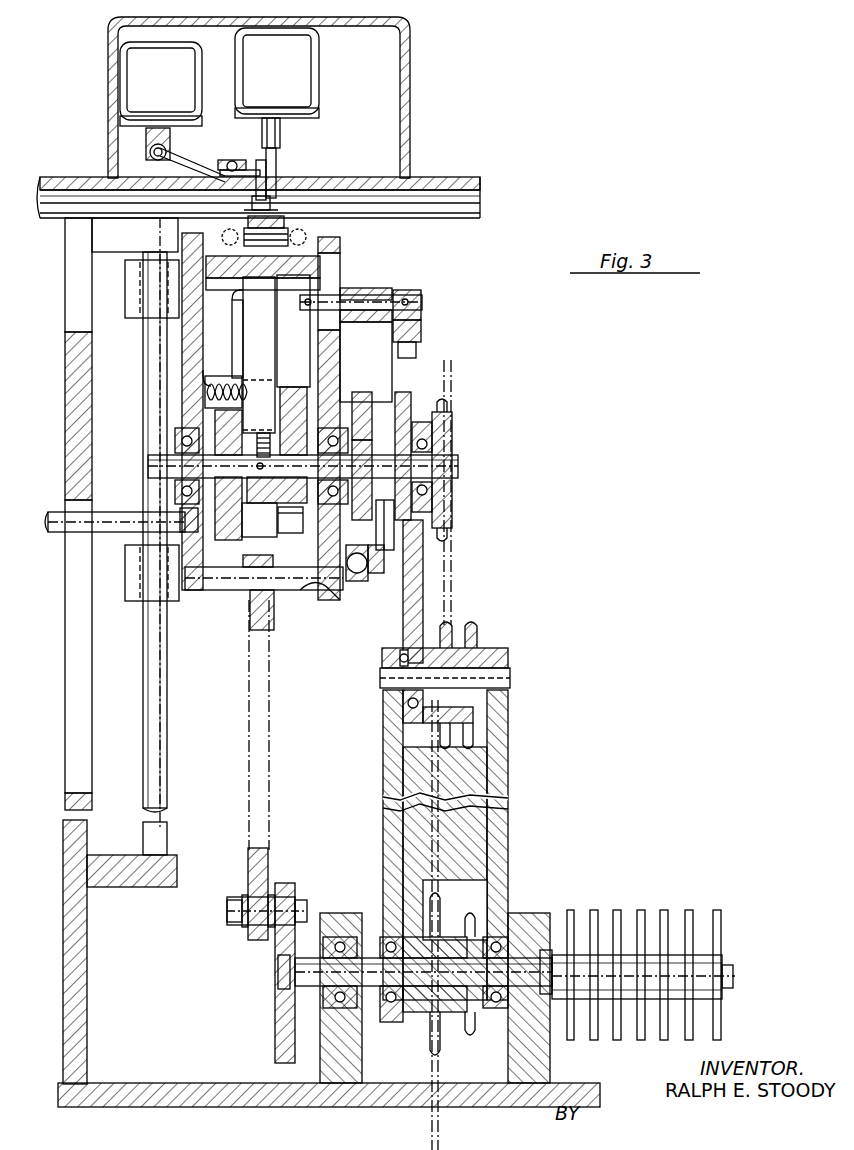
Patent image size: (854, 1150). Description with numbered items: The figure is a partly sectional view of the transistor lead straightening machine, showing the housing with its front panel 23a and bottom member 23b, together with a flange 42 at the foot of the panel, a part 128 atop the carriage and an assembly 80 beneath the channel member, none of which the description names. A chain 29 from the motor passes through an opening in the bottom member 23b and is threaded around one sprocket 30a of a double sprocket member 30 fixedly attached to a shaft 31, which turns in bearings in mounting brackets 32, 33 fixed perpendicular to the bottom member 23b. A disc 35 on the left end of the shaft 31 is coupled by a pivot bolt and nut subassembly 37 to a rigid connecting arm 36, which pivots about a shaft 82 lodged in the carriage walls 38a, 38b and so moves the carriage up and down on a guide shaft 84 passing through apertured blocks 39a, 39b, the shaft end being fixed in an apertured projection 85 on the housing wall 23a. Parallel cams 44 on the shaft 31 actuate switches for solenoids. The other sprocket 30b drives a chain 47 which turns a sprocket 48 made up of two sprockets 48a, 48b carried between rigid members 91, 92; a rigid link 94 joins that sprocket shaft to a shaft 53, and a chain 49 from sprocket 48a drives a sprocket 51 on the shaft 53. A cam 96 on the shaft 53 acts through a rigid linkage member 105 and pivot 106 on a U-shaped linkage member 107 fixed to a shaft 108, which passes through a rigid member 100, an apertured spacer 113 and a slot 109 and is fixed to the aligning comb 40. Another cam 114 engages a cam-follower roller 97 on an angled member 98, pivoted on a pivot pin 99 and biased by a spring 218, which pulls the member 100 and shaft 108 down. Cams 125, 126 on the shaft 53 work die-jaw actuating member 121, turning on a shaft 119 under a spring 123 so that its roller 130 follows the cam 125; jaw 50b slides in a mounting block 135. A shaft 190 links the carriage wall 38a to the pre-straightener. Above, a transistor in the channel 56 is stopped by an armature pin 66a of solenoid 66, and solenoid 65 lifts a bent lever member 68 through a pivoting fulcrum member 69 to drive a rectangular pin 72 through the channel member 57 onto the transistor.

The panel of the housing 23a is at (78, 983).
The bottom member of the housing 23b is at (184, 1087).
The chain 29 is at (440, 1137).
The double sprocket member 30 is at (440, 1011).
The sprocket 30a is at (432, 911).
The sprocket 30b is at (470, 1021).
The shaft 31 is at (732, 969).
The mounting bracket 32 is at (348, 1059).
The mounting bracket 33 is at (540, 1059).
The disc 35 is at (280, 1031).
The rigid connecting arm 36 is at (256, 869).
The pivot bolt and nut subassembly 37 is at (236, 915).
The carriage wall 38a is at (196, 593).
The carriage wall 38b is at (328, 601).
The apertured block 39a is at (152, 585).
The apertured block 39b is at (150, 302).
The aligning comb 40 is at (300, 292).
The flange 42 is at (118, 873).
The parallel cams 44 is at (688, 915).
The chain 47 is at (504, 901).
The sprocket 48 is at (485, 649).
The sprocket 48a is at (450, 633).
The sprocket 48b is at (476, 631).
The chain 49 is at (452, 573).
The jaw 50b is at (238, 237).
The sprocket 51 is at (448, 433).
The shaft 53 is at (460, 467).
The channel 56 is at (98, 198).
The channel member 57 is at (500, 165).
The solenoid 65 is at (145, 82).
The solenoid 66 is at (294, 72).
The armature pin 66a is at (275, 158).
The bent lever member 68 is at (203, 160).
The pivoting fulcrum member 69 is at (231, 158).
The rectangular pin 72 is at (272, 168).
The clutch 80 is at (290, 226).
The pivot pin or shaft 82 is at (232, 576).
The shaft 84 is at (152, 741).
The apertured projection 85 is at (118, 241).
The rigid member 91 is at (392, 753).
The rigid member 92 is at (500, 746).
The rigid link 94 is at (410, 621).
The cam 96 is at (406, 405).
The cam-follower roller 97 is at (356, 575).
The angled member 98 is at (374, 576).
The pivot pin 99 is at (386, 541).
The rigid member 100 is at (392, 379).
The rigid linkage member 105 is at (418, 351).
The pivot 106 is at (422, 339).
The rigid linkage member 107 is at (422, 297).
The shaft 108 is at (360, 302).
The slot 109 is at (338, 275).
The apertured spacer 113 is at (380, 321).
The cam 114 is at (350, 413).
The shaft 119 is at (350, 393).
The die-jaw actuating member 121 is at (268, 379).
The spring 123 is at (230, 361).
The cam 125 is at (306, 501).
The cam 126 is at (228, 521).
The plate 128 is at (262, 290).
The cam-follower roller 130 is at (276, 531).
The mounting block 135 is at (244, 254).
The shaft 190 is at (124, 525).
The biassing spring 218 is at (330, 593).